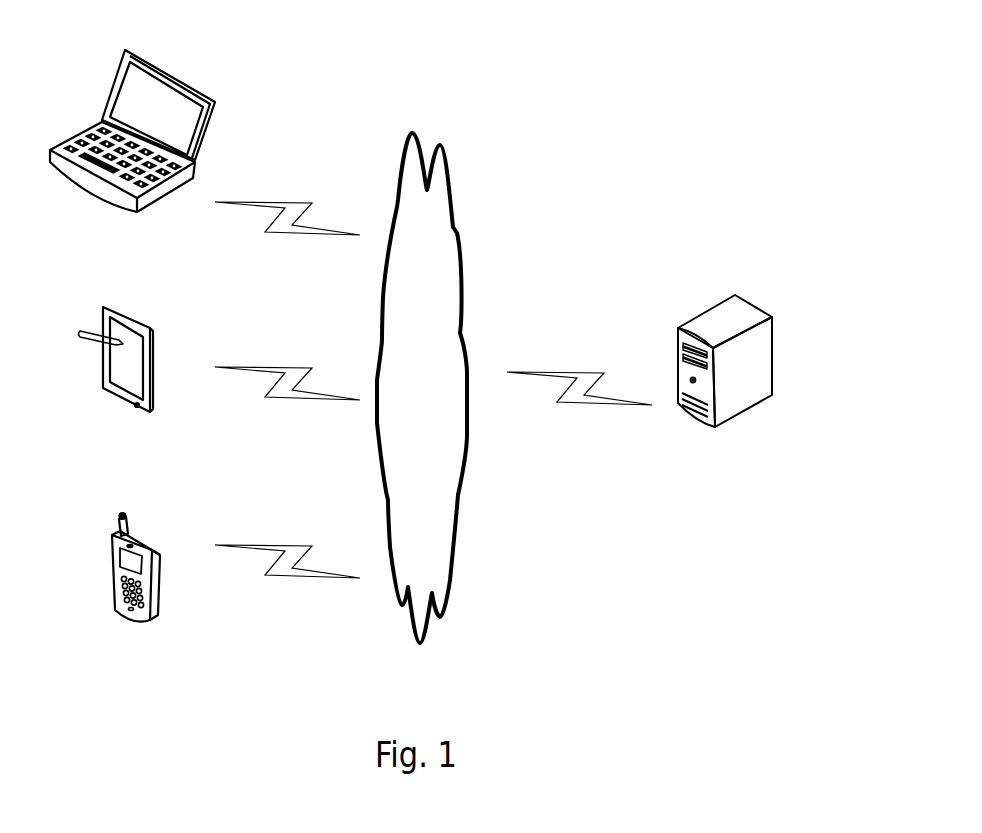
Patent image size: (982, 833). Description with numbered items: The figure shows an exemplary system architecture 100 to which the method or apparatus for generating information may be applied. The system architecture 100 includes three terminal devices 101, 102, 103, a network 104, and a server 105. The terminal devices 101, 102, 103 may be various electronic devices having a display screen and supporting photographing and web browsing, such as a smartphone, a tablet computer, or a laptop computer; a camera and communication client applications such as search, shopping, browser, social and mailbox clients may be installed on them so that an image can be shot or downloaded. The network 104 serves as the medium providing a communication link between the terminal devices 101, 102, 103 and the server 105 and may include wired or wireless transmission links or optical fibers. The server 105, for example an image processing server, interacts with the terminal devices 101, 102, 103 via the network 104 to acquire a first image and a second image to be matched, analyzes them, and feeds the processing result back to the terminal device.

The system architecture 100 is at (636, 40).
The terminal device 101 is at (136, 587).
The terminal device 102 is at (116, 379).
The terminal device 103 is at (132, 149).
The network 104 is at (422, 388).
The server 105 is at (725, 383).